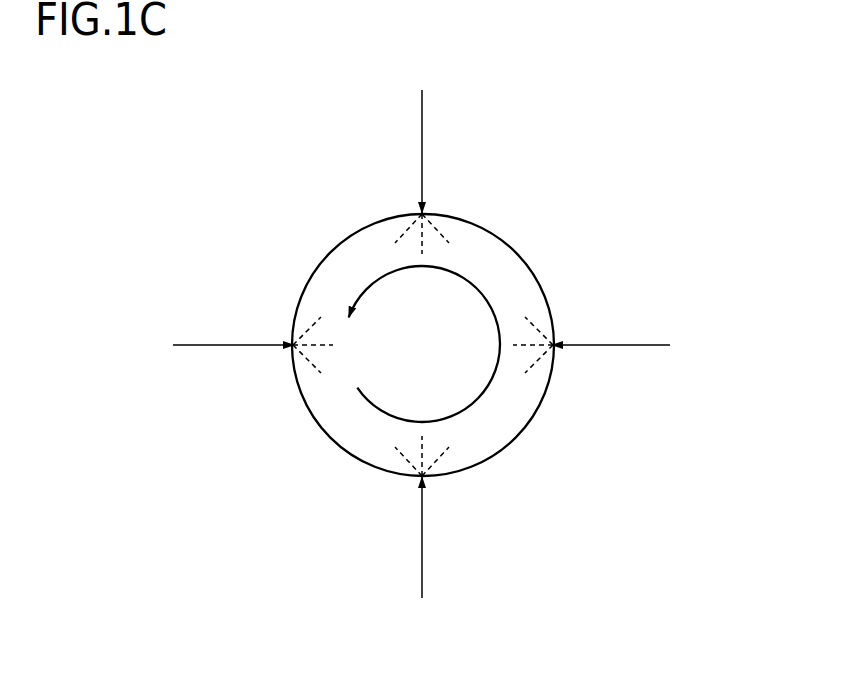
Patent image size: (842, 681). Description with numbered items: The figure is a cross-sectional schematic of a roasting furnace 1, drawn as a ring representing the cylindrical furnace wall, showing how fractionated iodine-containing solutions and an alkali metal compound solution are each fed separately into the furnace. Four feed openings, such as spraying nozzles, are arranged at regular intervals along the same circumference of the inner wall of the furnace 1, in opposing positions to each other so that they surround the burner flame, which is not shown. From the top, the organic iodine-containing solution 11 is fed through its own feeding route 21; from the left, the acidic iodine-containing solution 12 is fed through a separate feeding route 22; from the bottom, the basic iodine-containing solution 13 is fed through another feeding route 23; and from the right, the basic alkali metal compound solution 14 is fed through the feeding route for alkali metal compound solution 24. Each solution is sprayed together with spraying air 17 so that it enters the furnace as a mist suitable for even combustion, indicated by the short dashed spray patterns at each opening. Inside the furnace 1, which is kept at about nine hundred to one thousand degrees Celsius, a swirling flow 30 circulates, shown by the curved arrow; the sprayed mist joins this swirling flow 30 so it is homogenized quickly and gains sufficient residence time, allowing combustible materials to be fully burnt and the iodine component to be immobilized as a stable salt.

The roasting furnace 1 is at (508, 442).
The swirling flow 30 is at (493, 382).
The organic iodine-containing solution 11 is at (425, 153).
The acidic iodine-containing solution 12 is at (215, 345).
The basic iodine-containing solution 13 is at (426, 535).
The basic alkali metal compound solution 14 is at (629, 345).
The spraying air 17 is at (421, 343).
The feeding route for iodine-containing solution 21 is at (422, 138).
The feeding route for iodine-containing solution 22 is at (222, 345).
The feeding route for iodine-containing solution 23 is at (422, 530).
The feeding route for alkali metal compound solution 24 is at (608, 345).